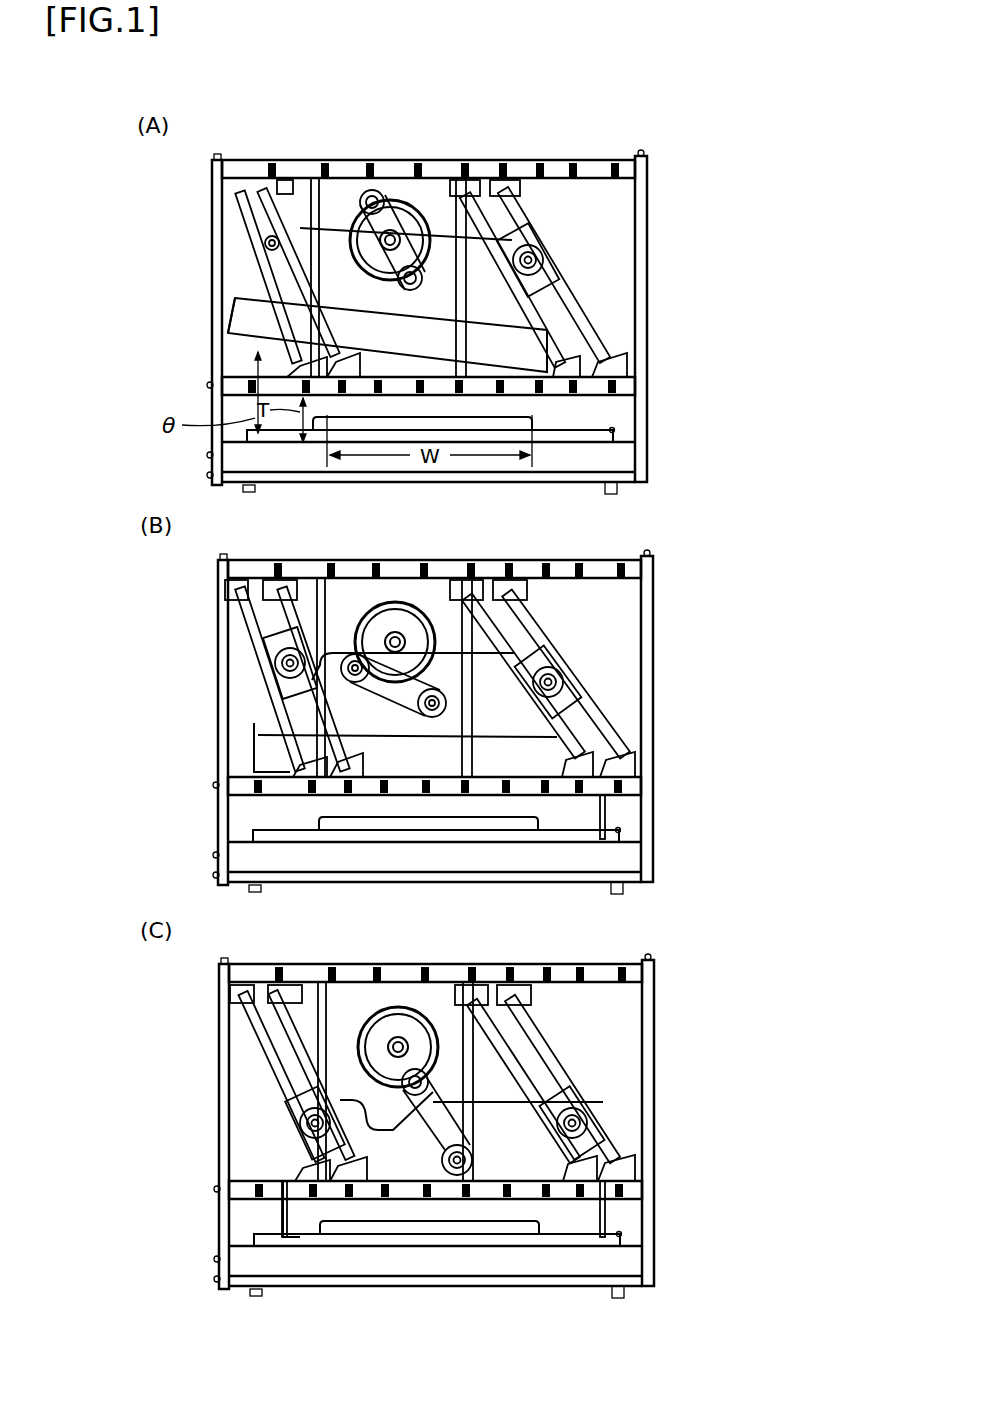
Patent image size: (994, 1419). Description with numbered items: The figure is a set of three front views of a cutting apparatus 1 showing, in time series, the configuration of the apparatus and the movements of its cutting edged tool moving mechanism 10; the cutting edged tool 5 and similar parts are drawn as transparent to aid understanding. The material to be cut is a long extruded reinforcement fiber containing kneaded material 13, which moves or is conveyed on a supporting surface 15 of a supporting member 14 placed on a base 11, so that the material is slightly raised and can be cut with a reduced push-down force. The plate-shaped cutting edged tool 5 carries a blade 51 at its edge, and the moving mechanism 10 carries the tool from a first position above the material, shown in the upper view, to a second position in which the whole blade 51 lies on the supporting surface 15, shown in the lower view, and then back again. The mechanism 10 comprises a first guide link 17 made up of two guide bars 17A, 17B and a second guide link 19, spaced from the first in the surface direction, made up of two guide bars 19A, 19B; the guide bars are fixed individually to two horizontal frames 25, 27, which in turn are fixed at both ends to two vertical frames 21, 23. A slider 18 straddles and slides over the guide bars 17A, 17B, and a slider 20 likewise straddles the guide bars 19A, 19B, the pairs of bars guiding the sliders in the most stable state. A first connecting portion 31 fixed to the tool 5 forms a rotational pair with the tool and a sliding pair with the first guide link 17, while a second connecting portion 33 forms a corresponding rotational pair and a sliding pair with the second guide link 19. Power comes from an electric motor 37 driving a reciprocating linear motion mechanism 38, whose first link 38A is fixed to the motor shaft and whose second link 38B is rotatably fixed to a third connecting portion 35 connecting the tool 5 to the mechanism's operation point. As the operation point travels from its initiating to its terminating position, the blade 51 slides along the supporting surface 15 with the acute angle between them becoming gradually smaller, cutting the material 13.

The cutting apparatus 1 is at (652, 168).
The cutting edged tool 5 is at (560, 302).
The cutting edged tool moving mechanism 10 is at (580, 216).
The base 11 is at (628, 460).
The extruded reinforcement fiber containing kneaded material 13 is at (580, 432).
The supporting member 14 is at (614, 433).
The supporting surface 15 is at (560, 419).
The first guide link 17 is at (575, 654).
The guide bar 17A is at (520, 190).
The guide bar 17B is at (472, 193).
The slider 18 is at (565, 275).
The second guide link 19 is at (264, 654).
The guide bar 19A is at (284, 193).
The guide bar 19B is at (250, 192).
The slider 20 is at (262, 256).
The vertical frame 21 is at (648, 226).
The vertical frame 23 is at (212, 366).
The horizontal frame 25 is at (590, 170).
The horizontal frame 27 is at (640, 386).
The first connecting portion 31 is at (560, 254).
The second connecting portion 33 is at (253, 690).
The third connecting portion 35 is at (418, 292).
The electric motor 37 is at (390, 200).
The reciprocating linear motion mechanism 38 is at (426, 639).
The first link 38A is at (356, 195).
The second link 38B is at (378, 290).
The blade 51 is at (240, 320).